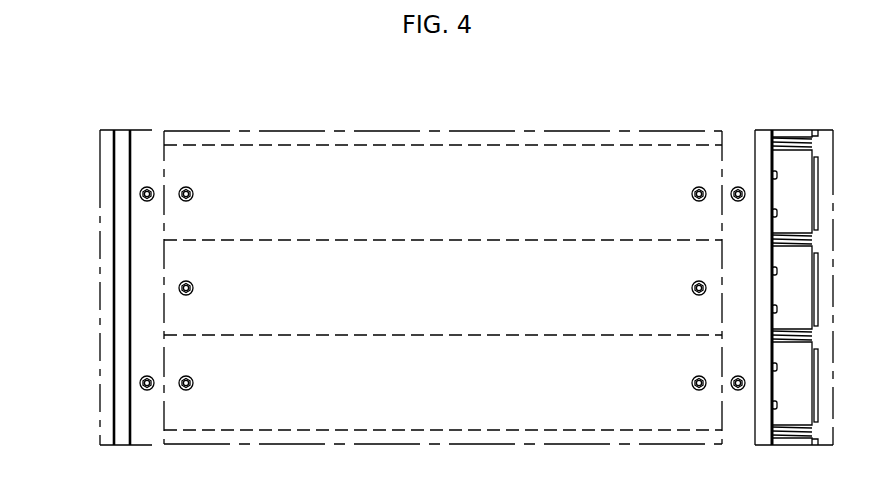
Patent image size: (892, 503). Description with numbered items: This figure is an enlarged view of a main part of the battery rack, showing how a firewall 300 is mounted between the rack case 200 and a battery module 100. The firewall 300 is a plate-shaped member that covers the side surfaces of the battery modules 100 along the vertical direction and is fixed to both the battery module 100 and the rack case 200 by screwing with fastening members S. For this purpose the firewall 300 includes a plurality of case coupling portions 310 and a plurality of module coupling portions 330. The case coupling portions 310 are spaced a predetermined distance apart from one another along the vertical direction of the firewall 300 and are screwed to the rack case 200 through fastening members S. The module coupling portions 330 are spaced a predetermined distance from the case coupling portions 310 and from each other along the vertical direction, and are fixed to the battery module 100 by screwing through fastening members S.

The battery module 100 is at (404, 190).
The rack case 200 is at (113, 178).
The firewall 300 is at (151, 247).
The case coupling portion 310 is at (737, 187).
The module coupling portion 330 is at (184, 187).
The fastening member S is at (147, 187).